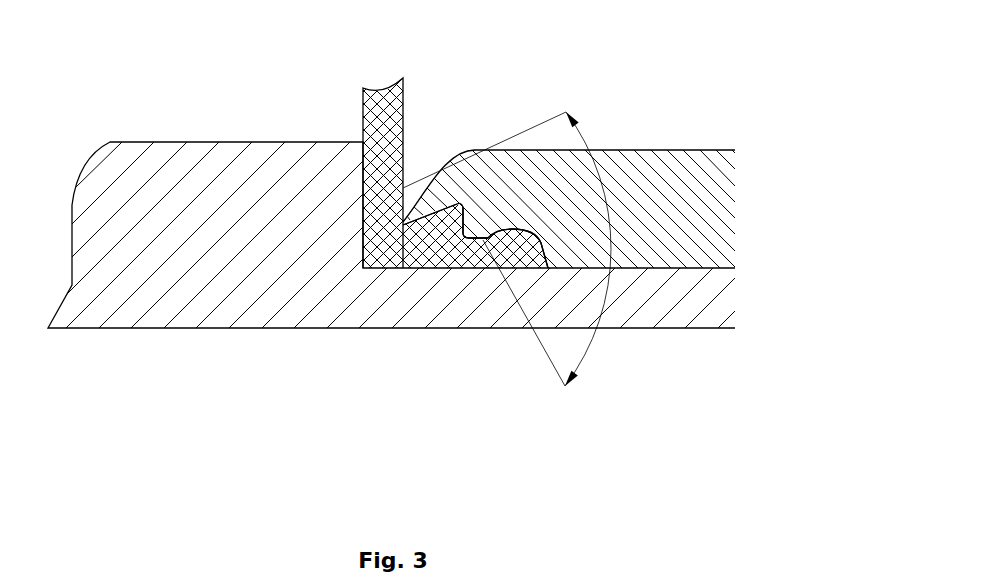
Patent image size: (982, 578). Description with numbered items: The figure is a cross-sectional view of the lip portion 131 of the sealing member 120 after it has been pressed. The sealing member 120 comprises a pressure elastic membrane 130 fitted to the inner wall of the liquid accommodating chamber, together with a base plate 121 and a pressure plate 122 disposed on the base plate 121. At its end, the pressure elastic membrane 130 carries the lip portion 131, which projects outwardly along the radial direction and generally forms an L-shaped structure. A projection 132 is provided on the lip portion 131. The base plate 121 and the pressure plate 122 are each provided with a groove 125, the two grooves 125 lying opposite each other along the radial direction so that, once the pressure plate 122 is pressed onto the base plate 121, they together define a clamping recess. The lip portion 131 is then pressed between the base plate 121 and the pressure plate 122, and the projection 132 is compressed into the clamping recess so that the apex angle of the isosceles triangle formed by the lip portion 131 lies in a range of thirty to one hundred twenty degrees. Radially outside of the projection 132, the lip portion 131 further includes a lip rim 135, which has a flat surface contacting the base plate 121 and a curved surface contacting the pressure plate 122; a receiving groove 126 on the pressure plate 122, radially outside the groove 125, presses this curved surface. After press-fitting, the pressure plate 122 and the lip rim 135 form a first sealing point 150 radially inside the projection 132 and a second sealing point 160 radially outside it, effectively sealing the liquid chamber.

The sealing member 120 is at (134, 57).
The base plate 121 is at (148, 288).
The pressure plate 122 is at (658, 182).
The groove 125 is at (463, 262).
The receiving groove 126 is at (505, 190).
The pressure elastic membrane 130 is at (387, 162).
The lip portion 131 is at (425, 250).
The projection 132 is at (460, 253).
The lip rim 135 is at (512, 252).
The first sealing point 150 is at (417, 217).
The second sealing point 160 is at (477, 237).